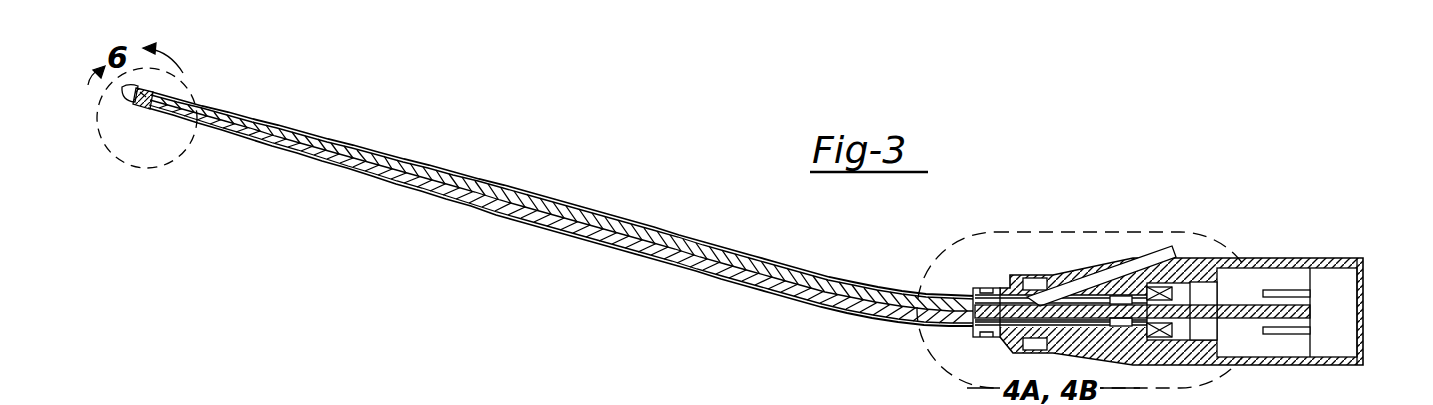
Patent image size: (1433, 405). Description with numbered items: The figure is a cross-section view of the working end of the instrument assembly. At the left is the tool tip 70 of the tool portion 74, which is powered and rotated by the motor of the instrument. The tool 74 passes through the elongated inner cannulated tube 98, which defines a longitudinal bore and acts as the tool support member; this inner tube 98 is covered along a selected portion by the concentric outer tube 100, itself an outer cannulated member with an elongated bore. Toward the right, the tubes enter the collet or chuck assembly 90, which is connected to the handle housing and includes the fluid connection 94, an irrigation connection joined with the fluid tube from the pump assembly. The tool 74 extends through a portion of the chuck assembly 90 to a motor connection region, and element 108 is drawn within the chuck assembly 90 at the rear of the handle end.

The tool tip 70 is at (150, 88).
The tool portion 74 is at (133, 117).
The outer tube 100 is at (478, 183).
The elongated tube 98 is at (500, 212).
The fluid connection 94 is at (1153, 243).
The chuck assembly 90 is at (1246, 250).
The drive rod 108 is at (1313, 313).